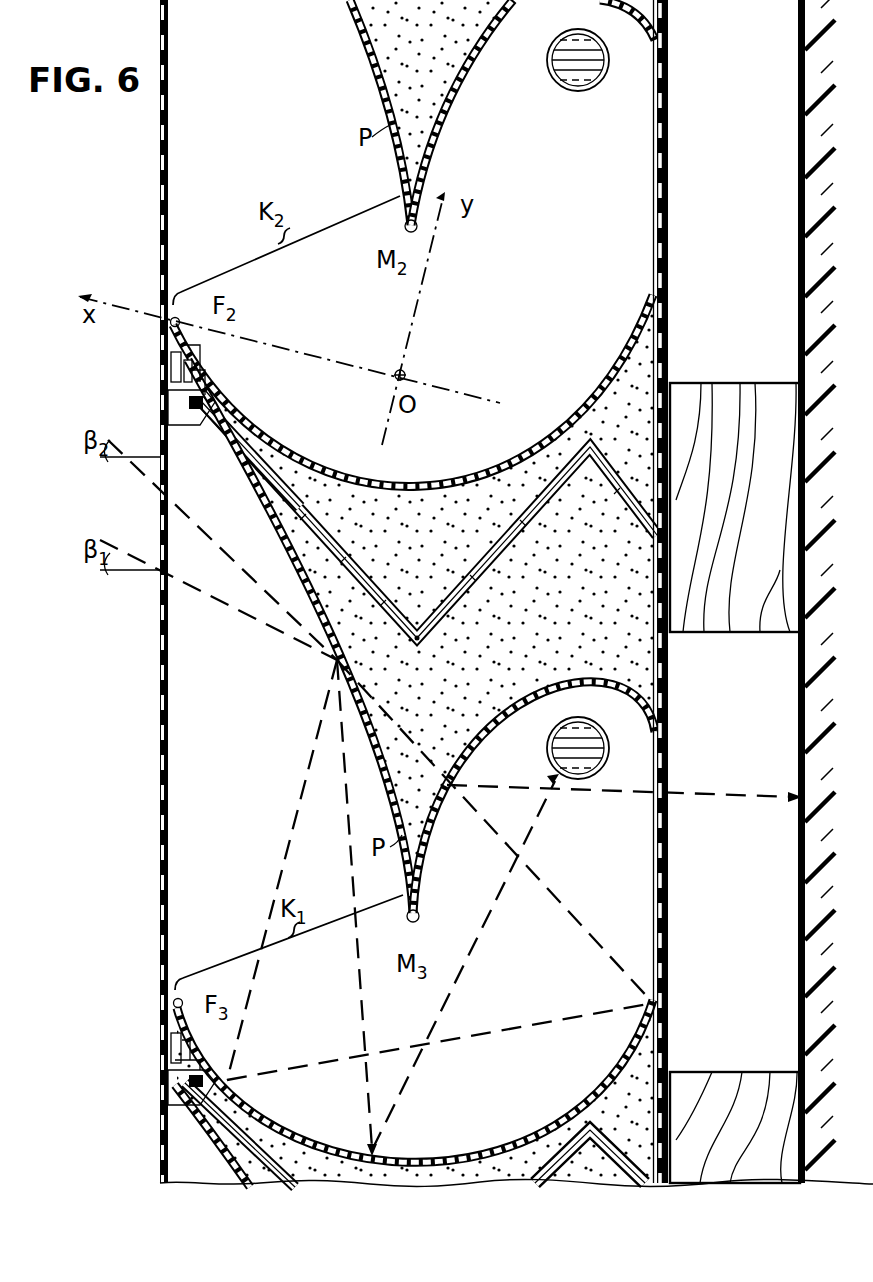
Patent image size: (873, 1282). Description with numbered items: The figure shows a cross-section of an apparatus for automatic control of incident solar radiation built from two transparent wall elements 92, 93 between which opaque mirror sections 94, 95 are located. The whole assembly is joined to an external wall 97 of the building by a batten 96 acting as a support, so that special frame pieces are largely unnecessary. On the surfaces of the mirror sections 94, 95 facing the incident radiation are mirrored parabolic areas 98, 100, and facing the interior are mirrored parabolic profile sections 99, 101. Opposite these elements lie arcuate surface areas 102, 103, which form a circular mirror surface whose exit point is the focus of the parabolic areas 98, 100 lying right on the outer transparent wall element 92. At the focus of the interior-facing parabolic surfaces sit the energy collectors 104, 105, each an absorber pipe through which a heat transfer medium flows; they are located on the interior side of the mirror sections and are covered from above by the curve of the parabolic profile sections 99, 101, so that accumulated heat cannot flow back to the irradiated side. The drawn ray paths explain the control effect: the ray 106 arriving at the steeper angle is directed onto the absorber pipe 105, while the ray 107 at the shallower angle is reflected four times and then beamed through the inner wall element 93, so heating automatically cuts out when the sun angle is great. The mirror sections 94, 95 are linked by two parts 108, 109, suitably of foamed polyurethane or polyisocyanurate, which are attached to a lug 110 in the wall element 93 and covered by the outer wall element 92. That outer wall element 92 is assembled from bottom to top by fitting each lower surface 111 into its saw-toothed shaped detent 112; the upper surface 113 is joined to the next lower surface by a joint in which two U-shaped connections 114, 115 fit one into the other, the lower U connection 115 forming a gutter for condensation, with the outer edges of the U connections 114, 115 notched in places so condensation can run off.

The transparent wall element 92 is at (172, 760).
The transparent wall element 93 is at (682, 919).
The mirror section 94 is at (388, 11).
The mirror section 95 is at (382, 495).
The batten 96 is at (771, 632).
The external wall 97 is at (783, 852).
The parabolic area 98 is at (381, 63).
The parabolic profile section 99 is at (443, 113).
The parabolic area 100 is at (287, 576).
The parabolic profile section 101 is at (455, 757).
The arcuate surface area 102 is at (501, 472).
The arcuate surface area 103 is at (545, 1120).
The energy collector 104 is at (564, 90).
The energy collector 105 is at (556, 748).
The ray 106 is at (234, 568).
The ray 107 is at (253, 604).
The part 108 is at (414, 604).
The part 109 is at (384, 636).
The lug 110 is at (620, 485).
The lower surface 111 is at (175, 401).
The saw-toothed shaped detent 112 is at (228, 400).
The upper surface 113 is at (172, 354).
The U-shaped connection 114 is at (172, 336).
The U-shaped connection 115 is at (206, 372).